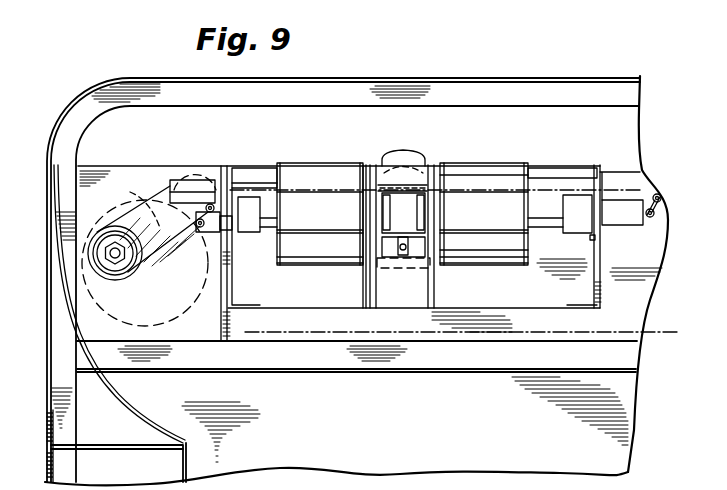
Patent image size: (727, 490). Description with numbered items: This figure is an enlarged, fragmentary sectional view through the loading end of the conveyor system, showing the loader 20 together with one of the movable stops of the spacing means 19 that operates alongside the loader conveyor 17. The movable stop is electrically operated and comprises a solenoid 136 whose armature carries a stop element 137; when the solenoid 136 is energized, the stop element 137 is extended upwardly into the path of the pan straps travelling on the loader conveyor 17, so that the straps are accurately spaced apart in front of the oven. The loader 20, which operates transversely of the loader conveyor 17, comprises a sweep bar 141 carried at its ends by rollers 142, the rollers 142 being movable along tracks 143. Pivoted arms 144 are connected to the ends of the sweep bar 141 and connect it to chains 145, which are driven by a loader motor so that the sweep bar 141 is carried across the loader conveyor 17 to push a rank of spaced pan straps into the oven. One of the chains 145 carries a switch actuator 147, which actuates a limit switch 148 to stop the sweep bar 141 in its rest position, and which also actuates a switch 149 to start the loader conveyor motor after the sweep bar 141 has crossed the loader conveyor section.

The loader conveyor 17 is at (497, 160).
The spacing means 19 is at (418, 210).
The loader 20 is at (90, 275).
The solenoid 136 is at (412, 226).
The stop element 137 is at (410, 152).
The sweep bar 141 is at (112, 288).
The rollers 142 is at (68, 250).
The tracks 143 is at (217, 165).
The pivoted arms 144 is at (143, 210).
The chains 145 is at (498, 190).
The switch actuator 147 is at (185, 180).
The limit switch 148 is at (213, 238).
The switch 149 is at (623, 220).